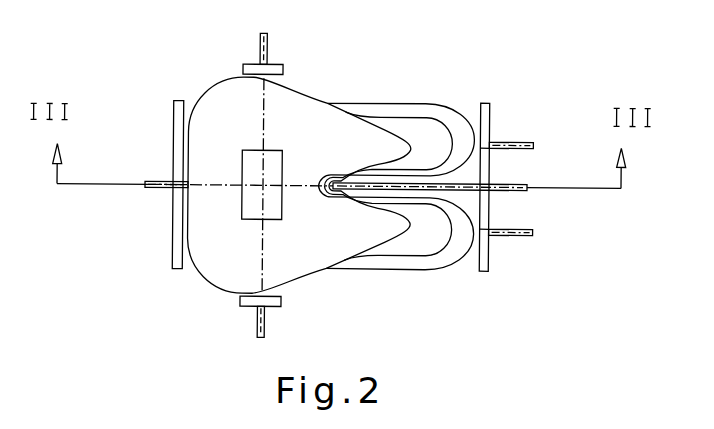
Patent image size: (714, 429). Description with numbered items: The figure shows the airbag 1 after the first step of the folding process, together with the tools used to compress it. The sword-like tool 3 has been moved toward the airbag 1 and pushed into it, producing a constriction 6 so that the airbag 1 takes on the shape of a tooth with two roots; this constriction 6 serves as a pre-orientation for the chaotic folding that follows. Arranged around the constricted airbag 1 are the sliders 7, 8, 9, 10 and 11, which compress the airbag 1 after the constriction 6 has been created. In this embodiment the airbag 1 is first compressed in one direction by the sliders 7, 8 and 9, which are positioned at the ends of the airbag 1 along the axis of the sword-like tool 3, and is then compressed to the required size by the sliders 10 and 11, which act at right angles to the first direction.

The airbag 1 is at (307, 112).
The sword-like tool 3 is at (522, 185).
The constriction 6 is at (383, 170).
The slider 7 is at (176, 102).
The slider 8 is at (487, 102).
The slider 9 is at (485, 272).
The slider 10 is at (281, 65).
The slider 11 is at (240, 303).